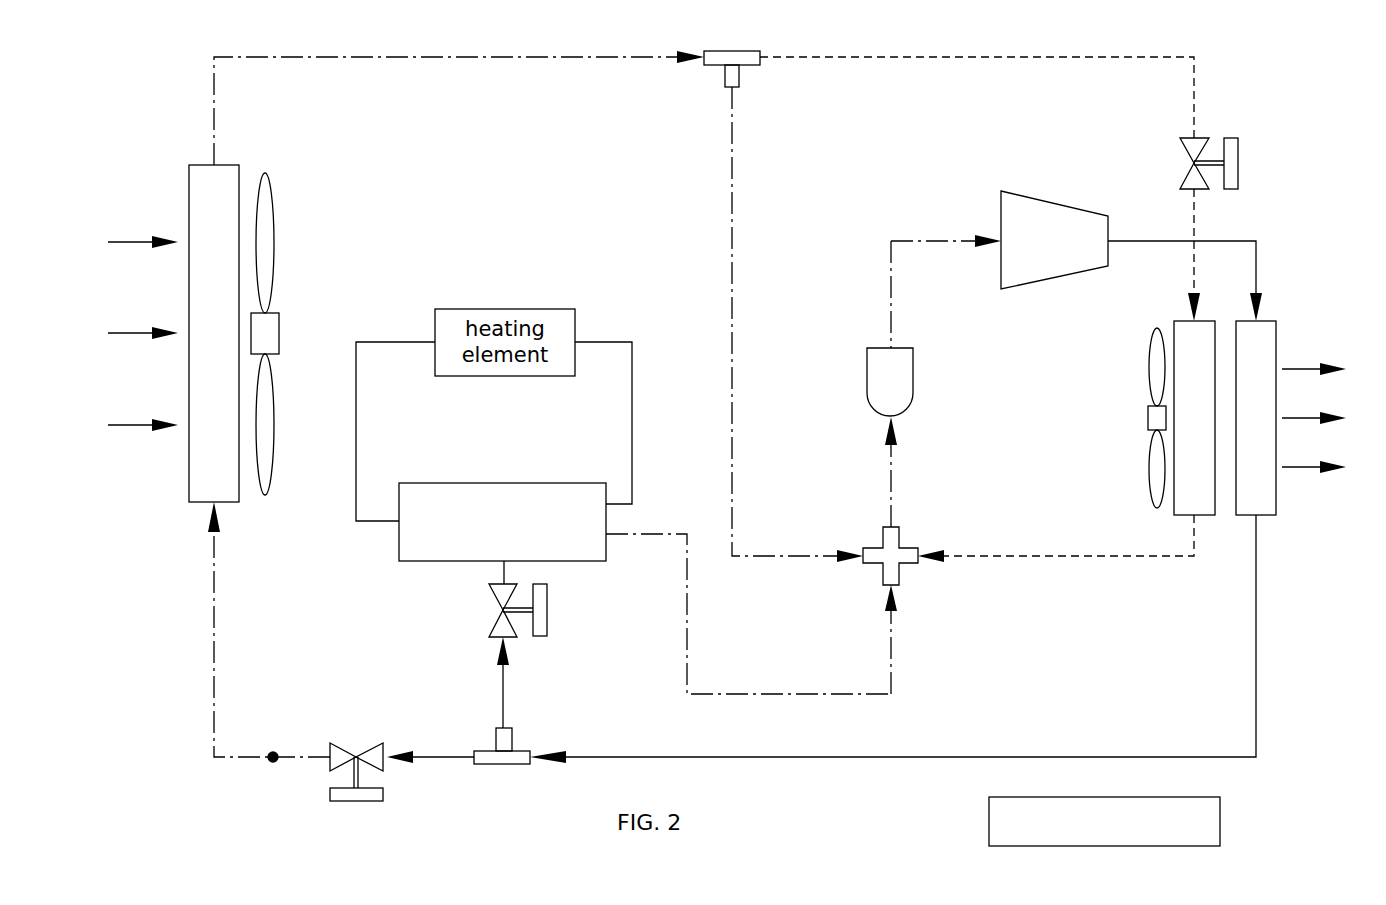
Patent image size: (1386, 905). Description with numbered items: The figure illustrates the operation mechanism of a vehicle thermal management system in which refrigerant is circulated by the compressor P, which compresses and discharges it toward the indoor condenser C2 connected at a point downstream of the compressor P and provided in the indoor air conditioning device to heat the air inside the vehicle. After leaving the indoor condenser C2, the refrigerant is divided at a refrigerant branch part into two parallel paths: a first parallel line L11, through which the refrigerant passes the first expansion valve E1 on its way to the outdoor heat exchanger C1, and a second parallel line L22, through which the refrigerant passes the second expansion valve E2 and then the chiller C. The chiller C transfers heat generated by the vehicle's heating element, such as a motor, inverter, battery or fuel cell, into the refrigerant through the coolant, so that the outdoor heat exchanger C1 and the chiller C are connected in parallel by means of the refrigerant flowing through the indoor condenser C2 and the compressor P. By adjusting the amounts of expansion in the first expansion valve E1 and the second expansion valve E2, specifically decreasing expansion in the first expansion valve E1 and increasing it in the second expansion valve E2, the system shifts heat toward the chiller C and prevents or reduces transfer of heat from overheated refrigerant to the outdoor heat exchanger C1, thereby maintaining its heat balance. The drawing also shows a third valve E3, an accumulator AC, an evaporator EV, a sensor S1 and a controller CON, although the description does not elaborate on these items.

The outdoor heat exchanger C1 is at (198, 165).
The indoor condenser C2 is at (1265, 517).
The chiller C is at (459, 483).
The compressor P is at (1058, 204).
The first expansion valve E1 is at (364, 748).
The second expansion valve E2 is at (495, 600).
The third expansion valve E3 is at (1238, 163).
The accumulator AC is at (913, 375).
The evaporator EV is at (1205, 517).
The sensor S1 is at (273, 763).
The first parallel line L11 is at (188, 620).
The second parallel line L22 is at (530, 696).
The controller CON is at (1220, 820).